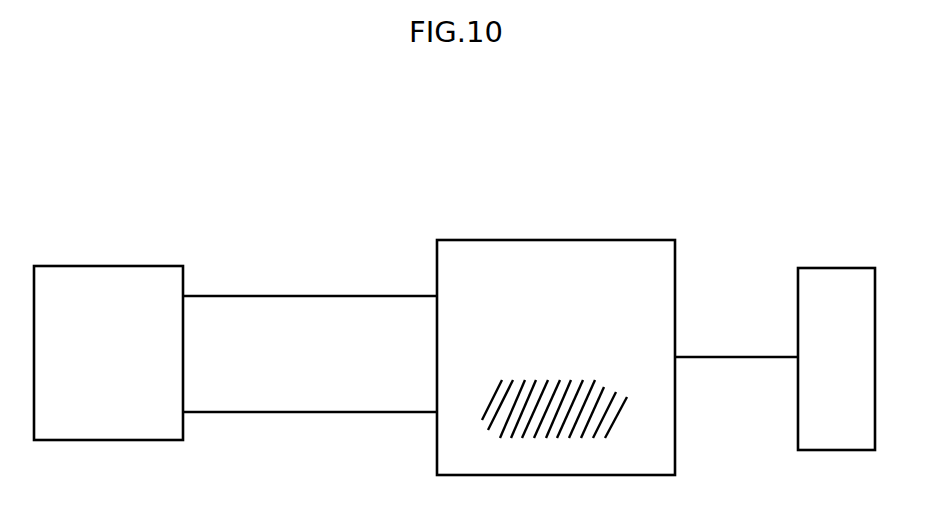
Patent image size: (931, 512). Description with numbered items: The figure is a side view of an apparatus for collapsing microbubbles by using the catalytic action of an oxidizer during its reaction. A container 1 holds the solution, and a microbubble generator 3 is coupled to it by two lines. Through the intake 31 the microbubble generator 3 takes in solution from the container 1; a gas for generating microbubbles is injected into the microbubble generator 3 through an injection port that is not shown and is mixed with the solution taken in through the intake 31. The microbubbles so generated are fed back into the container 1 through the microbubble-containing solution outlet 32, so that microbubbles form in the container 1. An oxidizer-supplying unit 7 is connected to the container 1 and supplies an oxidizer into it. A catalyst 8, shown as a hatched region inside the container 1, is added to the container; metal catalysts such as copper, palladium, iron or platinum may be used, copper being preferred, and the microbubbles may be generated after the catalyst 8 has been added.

The container 1 is at (556, 335).
The microbubble generator 3 is at (108, 333).
The oxidizer-supplying unit 7 is at (836, 338).
The catalyst 8 is at (554, 391).
The intake 31 is at (310, 281).
The microbubble-containing solution outlet 32 is at (310, 430).